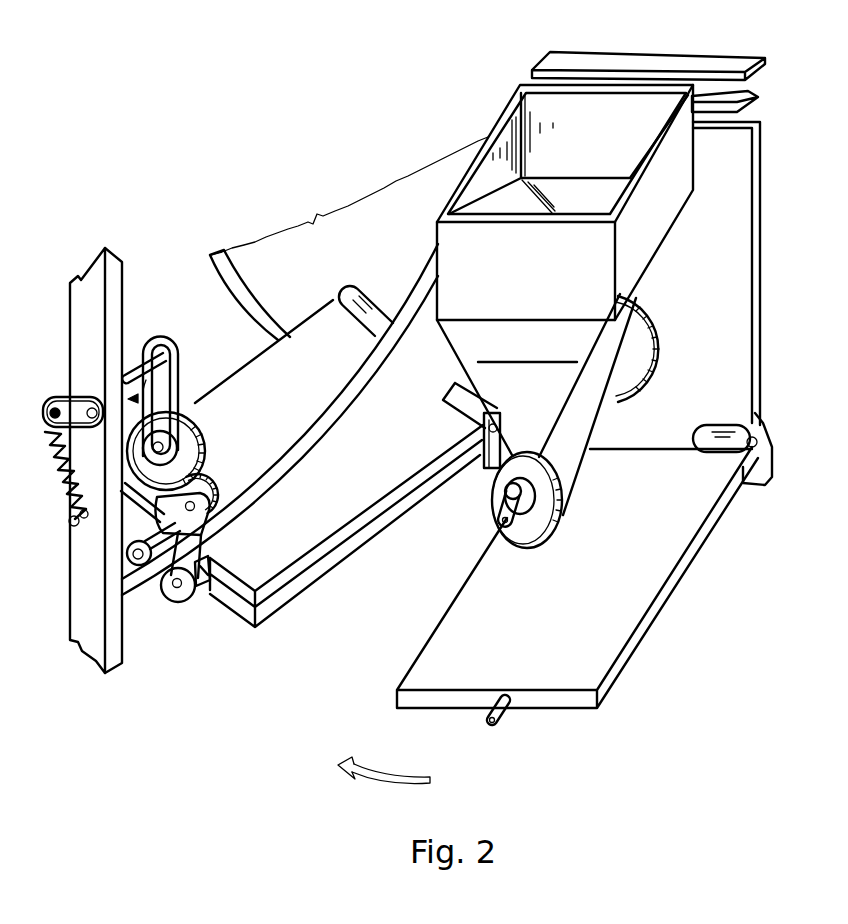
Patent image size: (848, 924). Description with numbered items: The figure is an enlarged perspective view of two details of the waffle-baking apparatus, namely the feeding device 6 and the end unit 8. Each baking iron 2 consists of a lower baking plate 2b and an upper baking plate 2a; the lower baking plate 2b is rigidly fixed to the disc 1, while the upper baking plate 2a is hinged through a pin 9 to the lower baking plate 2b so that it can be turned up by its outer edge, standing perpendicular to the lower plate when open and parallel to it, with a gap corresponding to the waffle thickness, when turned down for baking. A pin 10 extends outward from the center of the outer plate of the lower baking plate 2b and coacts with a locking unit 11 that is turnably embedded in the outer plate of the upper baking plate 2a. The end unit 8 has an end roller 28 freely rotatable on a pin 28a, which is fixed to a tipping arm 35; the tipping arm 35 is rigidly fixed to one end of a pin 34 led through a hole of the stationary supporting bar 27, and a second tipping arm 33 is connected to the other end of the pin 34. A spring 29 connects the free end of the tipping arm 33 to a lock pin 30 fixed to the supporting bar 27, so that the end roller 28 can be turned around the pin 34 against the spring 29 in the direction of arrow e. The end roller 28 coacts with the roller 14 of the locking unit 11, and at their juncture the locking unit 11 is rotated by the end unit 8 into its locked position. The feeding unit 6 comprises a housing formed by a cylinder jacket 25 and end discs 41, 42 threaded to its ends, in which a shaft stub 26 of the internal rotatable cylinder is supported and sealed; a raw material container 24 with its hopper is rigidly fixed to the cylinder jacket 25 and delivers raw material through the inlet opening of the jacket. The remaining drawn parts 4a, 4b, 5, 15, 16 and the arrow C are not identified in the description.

The disc 1 is at (312, 220).
The baking iron 2 is at (765, 423).
The upper baking plate 2a is at (742, 256).
The lower baking plate 2b is at (581, 686).
The lid strip 4a is at (711, 94).
The lid 4b is at (590, 66).
The curved guide rail 5 is at (311, 424).
The feeding device 6 is at (486, 107).
The end unit 8 is at (111, 243).
The pin 9 is at (498, 450).
The pin 10 is at (166, 590).
The locking unit 11 is at (229, 573).
The roller 14 is at (214, 490).
The roller 15 is at (140, 566).
The lever arm 16 is at (204, 590).
The raw material container 24 is at (478, 337).
The cylinder jacket 25 is at (596, 425).
The shaft stub 26 is at (504, 520).
The stationary supporting bar 27 is at (118, 273).
The end roller 28 is at (184, 455).
The pin 28a is at (162, 446).
The spring 29 is at (78, 475).
The lock pin 30 is at (76, 526).
The tipping arm 33 is at (70, 408).
The pin 34 is at (162, 346).
The tipping arm 35 is at (178, 376).
The end disc 41 is at (656, 325).
The end disc 42 is at (556, 512).
The arrow e is at (138, 358).
The direction arrow C is at (396, 779).